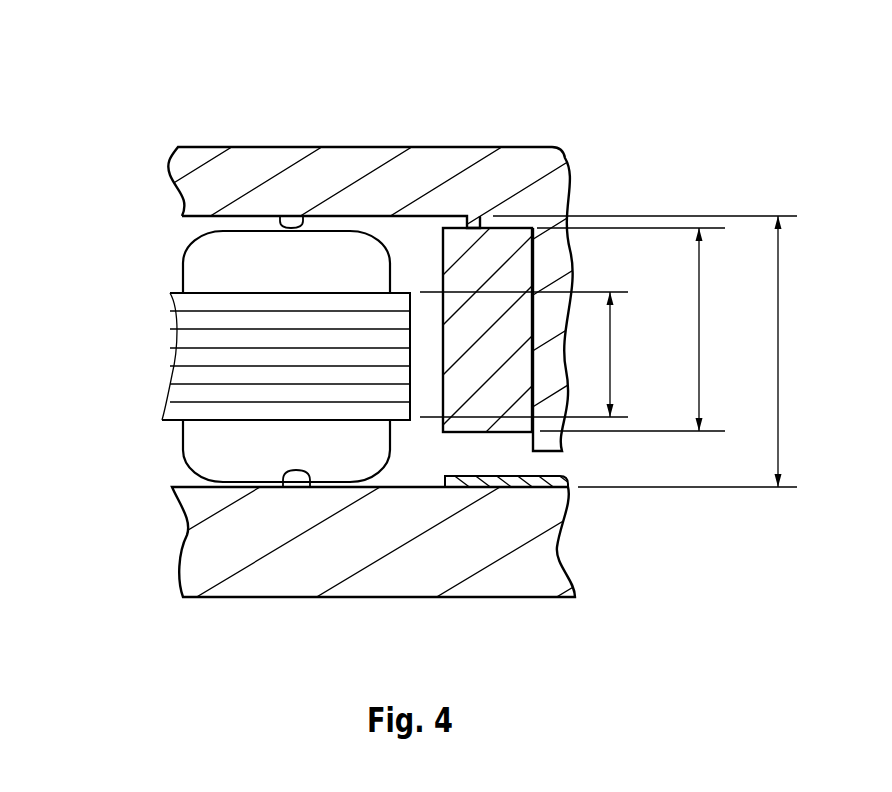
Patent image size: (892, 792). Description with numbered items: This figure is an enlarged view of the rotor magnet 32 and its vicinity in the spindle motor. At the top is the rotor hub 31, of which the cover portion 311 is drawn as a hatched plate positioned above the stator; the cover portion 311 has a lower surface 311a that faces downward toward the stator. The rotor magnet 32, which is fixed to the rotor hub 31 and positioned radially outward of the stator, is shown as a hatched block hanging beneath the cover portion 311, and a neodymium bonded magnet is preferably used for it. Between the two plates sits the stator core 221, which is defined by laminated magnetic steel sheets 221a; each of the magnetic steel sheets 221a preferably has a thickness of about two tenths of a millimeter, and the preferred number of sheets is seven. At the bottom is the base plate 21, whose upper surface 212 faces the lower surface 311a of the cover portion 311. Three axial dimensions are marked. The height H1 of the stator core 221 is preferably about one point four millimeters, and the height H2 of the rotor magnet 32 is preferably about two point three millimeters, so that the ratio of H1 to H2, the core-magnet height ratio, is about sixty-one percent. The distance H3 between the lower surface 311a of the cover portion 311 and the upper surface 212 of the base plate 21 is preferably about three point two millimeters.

The base plate 21 is at (385, 575).
The upper surface of the base plate 212 is at (283, 484).
The stator core 221 is at (226, 329).
The magnetic steel sheets 221a is at (177, 305).
The rotor hub 31 is at (446, 241).
The cover portion 311 is at (333, 182).
The lower surface of the cover portion 311a is at (283, 227).
The rotor magnet 32 is at (462, 240).
The height of the stator core H1 is at (610, 342).
The height of the rotor magnet H2 is at (699, 345).
The distance between the lower surface of the cover portion and the upper surface of H3 is at (778, 360).